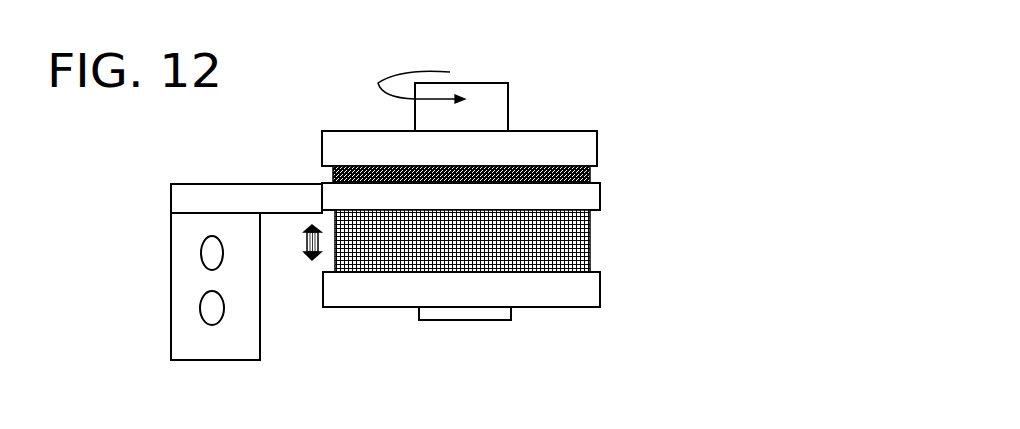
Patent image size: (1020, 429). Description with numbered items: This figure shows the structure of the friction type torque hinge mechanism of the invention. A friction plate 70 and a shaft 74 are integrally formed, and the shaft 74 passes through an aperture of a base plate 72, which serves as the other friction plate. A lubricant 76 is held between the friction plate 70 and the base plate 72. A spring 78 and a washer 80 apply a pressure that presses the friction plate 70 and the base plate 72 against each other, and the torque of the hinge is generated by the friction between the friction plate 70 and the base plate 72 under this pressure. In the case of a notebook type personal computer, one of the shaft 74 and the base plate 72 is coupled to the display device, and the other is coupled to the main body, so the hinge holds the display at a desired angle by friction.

The friction plate 70 is at (580, 147).
The base plate 72 is at (592, 196).
The shaft 74 is at (488, 103).
The lubricant 76 is at (590, 173).
The spring 78 is at (583, 238).
The washer 80 is at (587, 286).